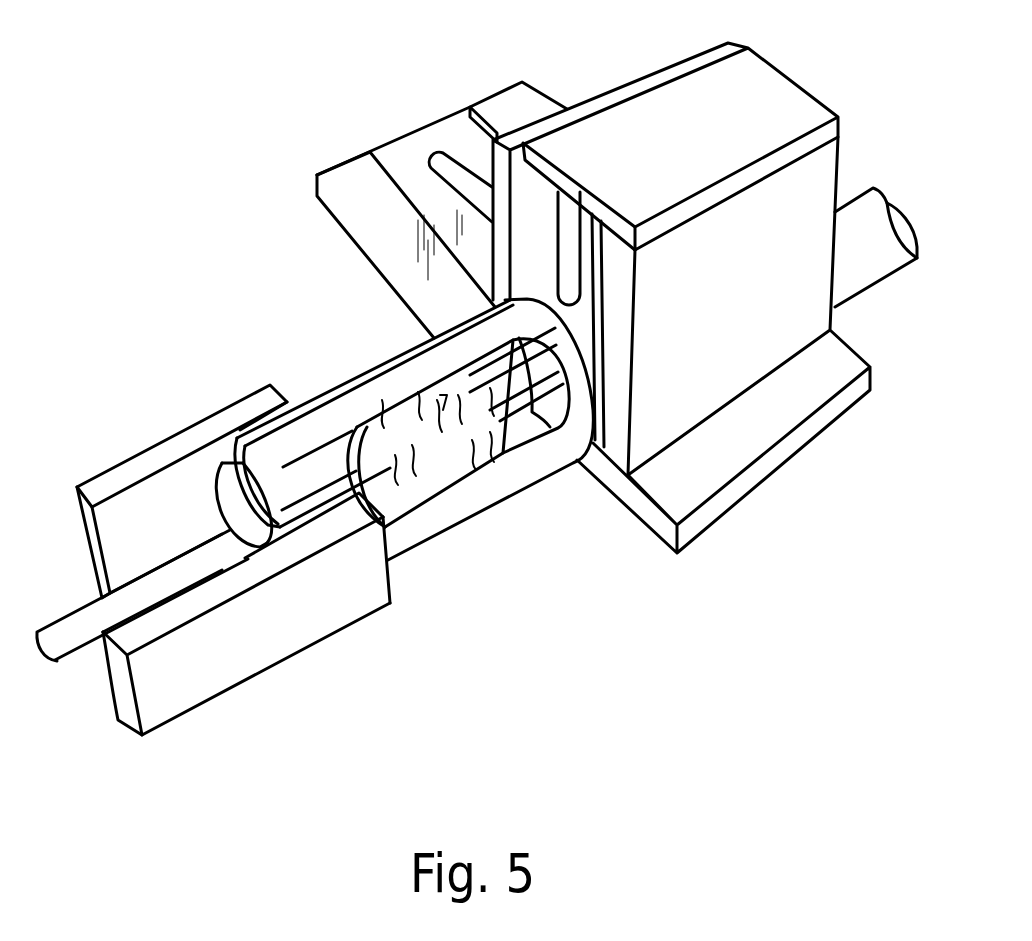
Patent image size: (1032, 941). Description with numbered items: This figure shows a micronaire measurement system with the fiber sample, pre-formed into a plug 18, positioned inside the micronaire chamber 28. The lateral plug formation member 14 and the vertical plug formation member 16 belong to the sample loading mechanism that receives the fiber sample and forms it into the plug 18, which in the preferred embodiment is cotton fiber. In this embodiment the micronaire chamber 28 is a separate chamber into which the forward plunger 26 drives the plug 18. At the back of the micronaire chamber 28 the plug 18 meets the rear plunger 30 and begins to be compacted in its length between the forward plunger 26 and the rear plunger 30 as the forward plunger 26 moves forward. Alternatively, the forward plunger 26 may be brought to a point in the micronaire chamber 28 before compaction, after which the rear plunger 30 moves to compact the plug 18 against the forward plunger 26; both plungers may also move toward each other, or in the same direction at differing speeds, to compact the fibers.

The lateral plug formation member 14 is at (575, 102).
The vertical plug formation member 16 is at (540, 292).
The plug 18 is at (461, 443).
The forward plunger 26 is at (503, 465).
The micronaire chamber 28 is at (437, 357).
The rear plunger 30 is at (360, 468).